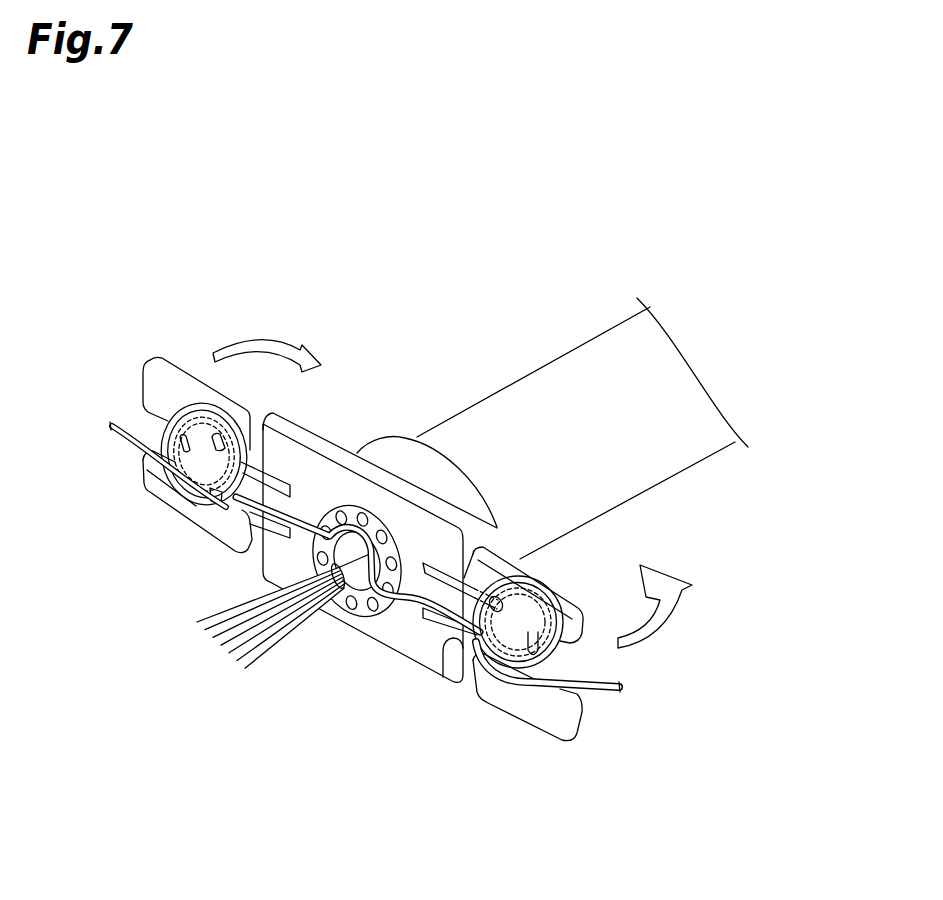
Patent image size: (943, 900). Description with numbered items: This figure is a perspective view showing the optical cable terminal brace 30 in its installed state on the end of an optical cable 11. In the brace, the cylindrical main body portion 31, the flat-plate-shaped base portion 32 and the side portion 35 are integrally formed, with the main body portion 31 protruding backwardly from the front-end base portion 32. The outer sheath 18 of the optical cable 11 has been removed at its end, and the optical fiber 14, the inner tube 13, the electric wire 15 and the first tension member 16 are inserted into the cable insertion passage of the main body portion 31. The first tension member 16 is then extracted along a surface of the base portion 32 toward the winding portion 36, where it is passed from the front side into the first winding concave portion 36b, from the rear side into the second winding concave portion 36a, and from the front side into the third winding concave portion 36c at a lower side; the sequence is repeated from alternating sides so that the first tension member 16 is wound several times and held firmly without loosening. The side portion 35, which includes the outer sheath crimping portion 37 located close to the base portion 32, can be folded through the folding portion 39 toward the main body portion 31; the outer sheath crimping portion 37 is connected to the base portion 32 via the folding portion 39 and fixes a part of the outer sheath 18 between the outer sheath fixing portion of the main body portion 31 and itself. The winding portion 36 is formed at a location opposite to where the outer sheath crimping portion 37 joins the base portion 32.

The optical cable 11 is at (474, 304).
The inner tube 13 is at (363, 590).
The optical fiber 14 is at (253, 633).
The electric wire 15 is at (387, 620).
The first tension member 16 is at (122, 452).
The outer sheath 18 is at (685, 380).
The optical cable terminal brace 30 is at (510, 785).
The main body portion 31 is at (398, 441).
The base portion 32 is at (272, 570).
The side portion 35 is at (142, 500).
The winding portion 36 is at (358, 532).
The second winding concave portion 36a is at (200, 433).
The first winding concave portion 36b is at (157, 435).
The third winding concave portion 36c is at (213, 500).
The outer sheath crimping portion 37 is at (448, 640).
The folding portion 39 is at (270, 490).